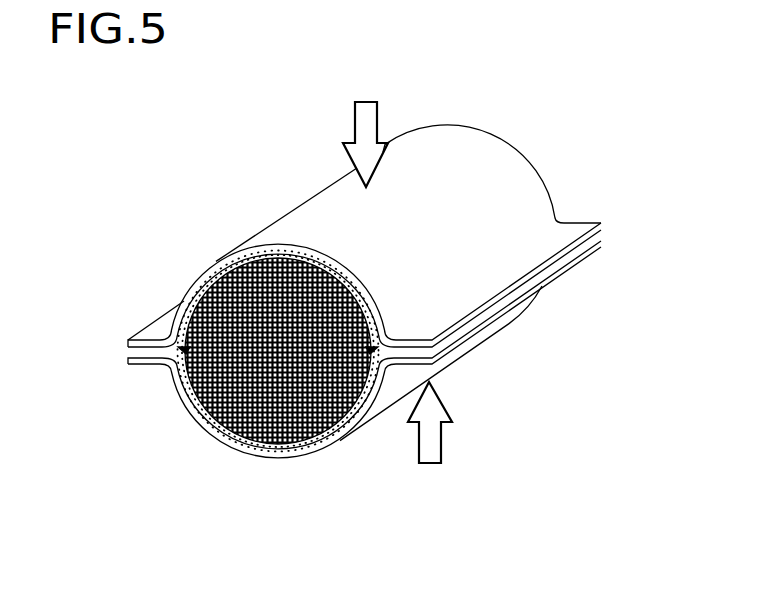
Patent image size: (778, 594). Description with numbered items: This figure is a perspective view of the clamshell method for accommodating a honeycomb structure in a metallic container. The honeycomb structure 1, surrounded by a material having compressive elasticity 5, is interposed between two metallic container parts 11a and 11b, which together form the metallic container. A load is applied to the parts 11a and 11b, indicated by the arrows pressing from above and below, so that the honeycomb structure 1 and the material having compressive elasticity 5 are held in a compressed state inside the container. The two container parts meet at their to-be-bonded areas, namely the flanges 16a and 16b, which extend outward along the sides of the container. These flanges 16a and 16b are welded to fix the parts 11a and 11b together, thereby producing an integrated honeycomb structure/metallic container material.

The honeycomb structure 1 is at (291, 390).
The material having compressive elasticity 5 is at (257, 447).
The metallic container part 11a is at (313, 223).
The metallic container part 11b is at (183, 405).
The flange 16a is at (132, 350).
The flange 16b is at (477, 335).